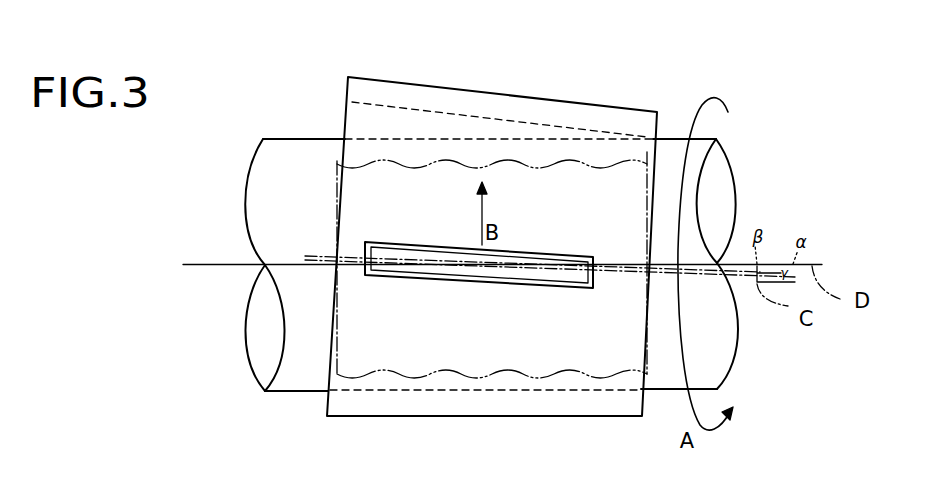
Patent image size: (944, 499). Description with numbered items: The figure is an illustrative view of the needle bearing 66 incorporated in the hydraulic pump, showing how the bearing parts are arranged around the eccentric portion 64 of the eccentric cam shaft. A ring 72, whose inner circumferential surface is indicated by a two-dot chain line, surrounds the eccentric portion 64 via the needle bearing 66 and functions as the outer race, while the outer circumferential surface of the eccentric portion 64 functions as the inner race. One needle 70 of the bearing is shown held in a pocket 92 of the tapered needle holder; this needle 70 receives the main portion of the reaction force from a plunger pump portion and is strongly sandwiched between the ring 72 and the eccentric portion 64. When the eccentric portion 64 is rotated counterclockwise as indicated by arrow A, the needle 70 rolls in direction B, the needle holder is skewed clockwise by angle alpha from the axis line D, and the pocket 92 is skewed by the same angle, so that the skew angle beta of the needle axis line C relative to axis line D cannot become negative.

The eccentric portion 64 is at (700, 143).
The needle bearing 66 is at (355, 56).
The needle 70 is at (518, 268).
The ring 72 is at (597, 165).
The pocket 92 is at (395, 246).